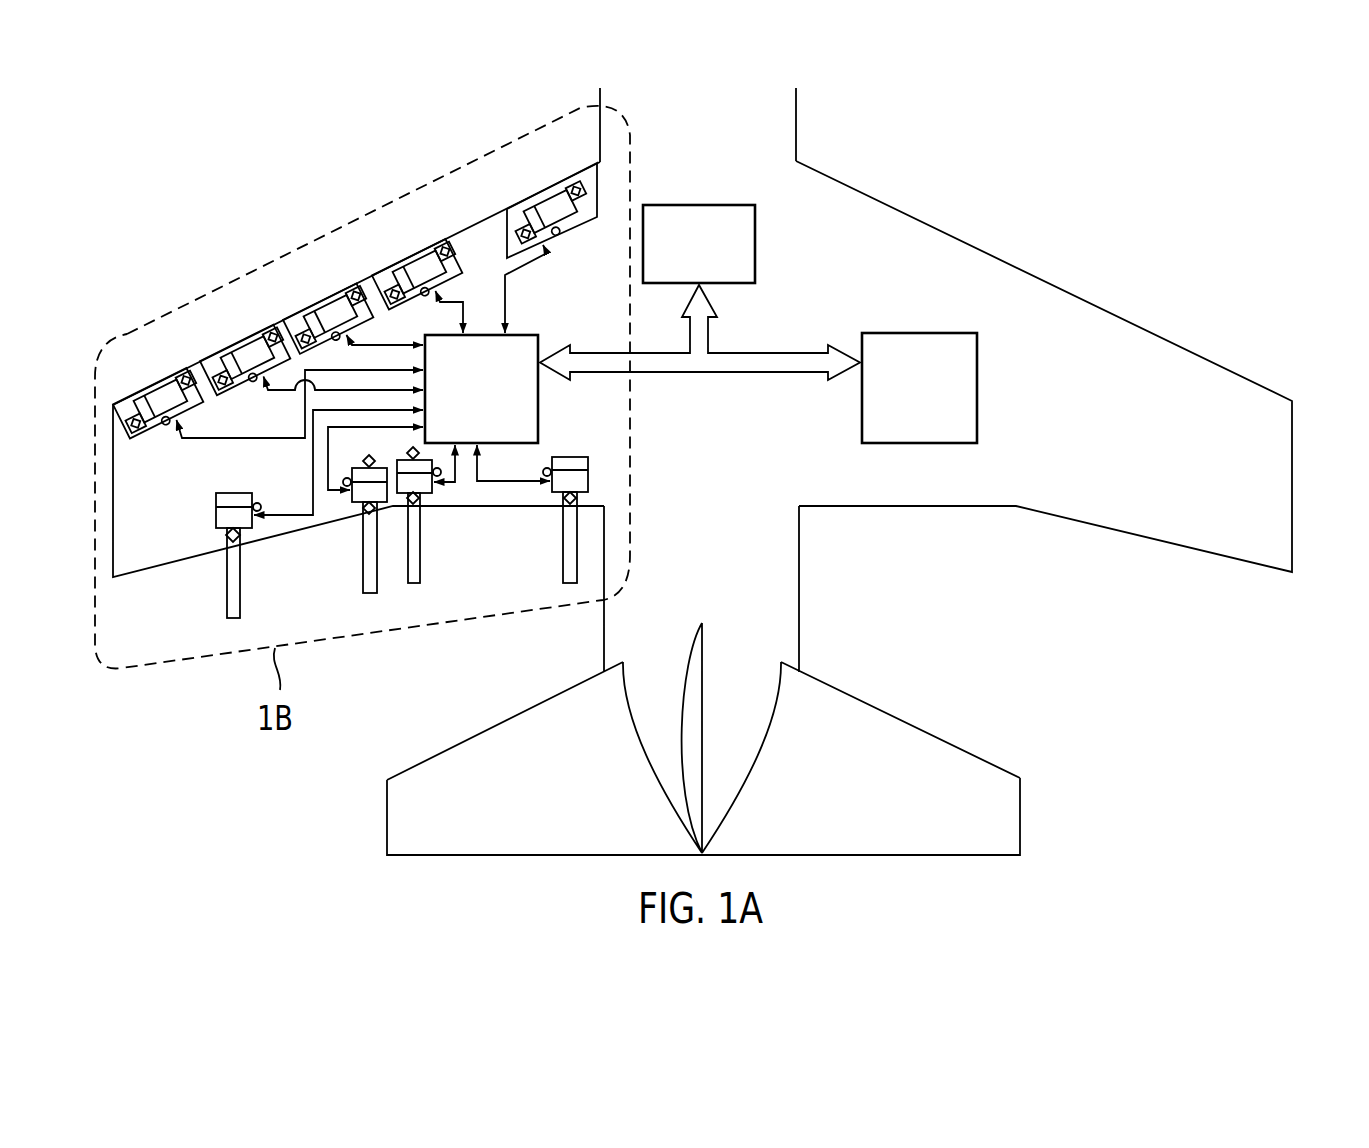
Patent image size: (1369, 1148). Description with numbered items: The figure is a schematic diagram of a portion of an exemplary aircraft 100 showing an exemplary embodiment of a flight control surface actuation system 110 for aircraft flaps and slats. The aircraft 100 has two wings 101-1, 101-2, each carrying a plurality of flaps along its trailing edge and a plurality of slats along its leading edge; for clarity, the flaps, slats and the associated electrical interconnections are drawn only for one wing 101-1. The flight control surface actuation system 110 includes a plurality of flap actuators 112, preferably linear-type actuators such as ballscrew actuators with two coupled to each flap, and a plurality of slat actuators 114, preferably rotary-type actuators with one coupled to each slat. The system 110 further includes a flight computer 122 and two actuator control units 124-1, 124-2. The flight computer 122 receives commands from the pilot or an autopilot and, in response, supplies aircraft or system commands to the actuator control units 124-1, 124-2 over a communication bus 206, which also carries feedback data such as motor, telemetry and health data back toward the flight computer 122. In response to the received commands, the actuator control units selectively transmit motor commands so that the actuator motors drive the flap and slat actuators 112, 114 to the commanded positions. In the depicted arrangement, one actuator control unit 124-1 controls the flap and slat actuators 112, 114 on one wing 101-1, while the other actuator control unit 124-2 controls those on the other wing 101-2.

The aircraft 100 is at (699, 471).
The wing 101-1 is at (112, 530).
The wing 101-2 is at (1292, 511).
The flight control surface actuation system 110 is at (733, 192).
The flap actuators 112 is at (226, 551).
The slat actuators 114 is at (149, 380).
The flight computer 122 is at (757, 243).
The actuator control unit 124-1 is at (533, 335).
The actuator control unit 124-2 is at (920, 443).
The communication bus 206 is at (703, 372).